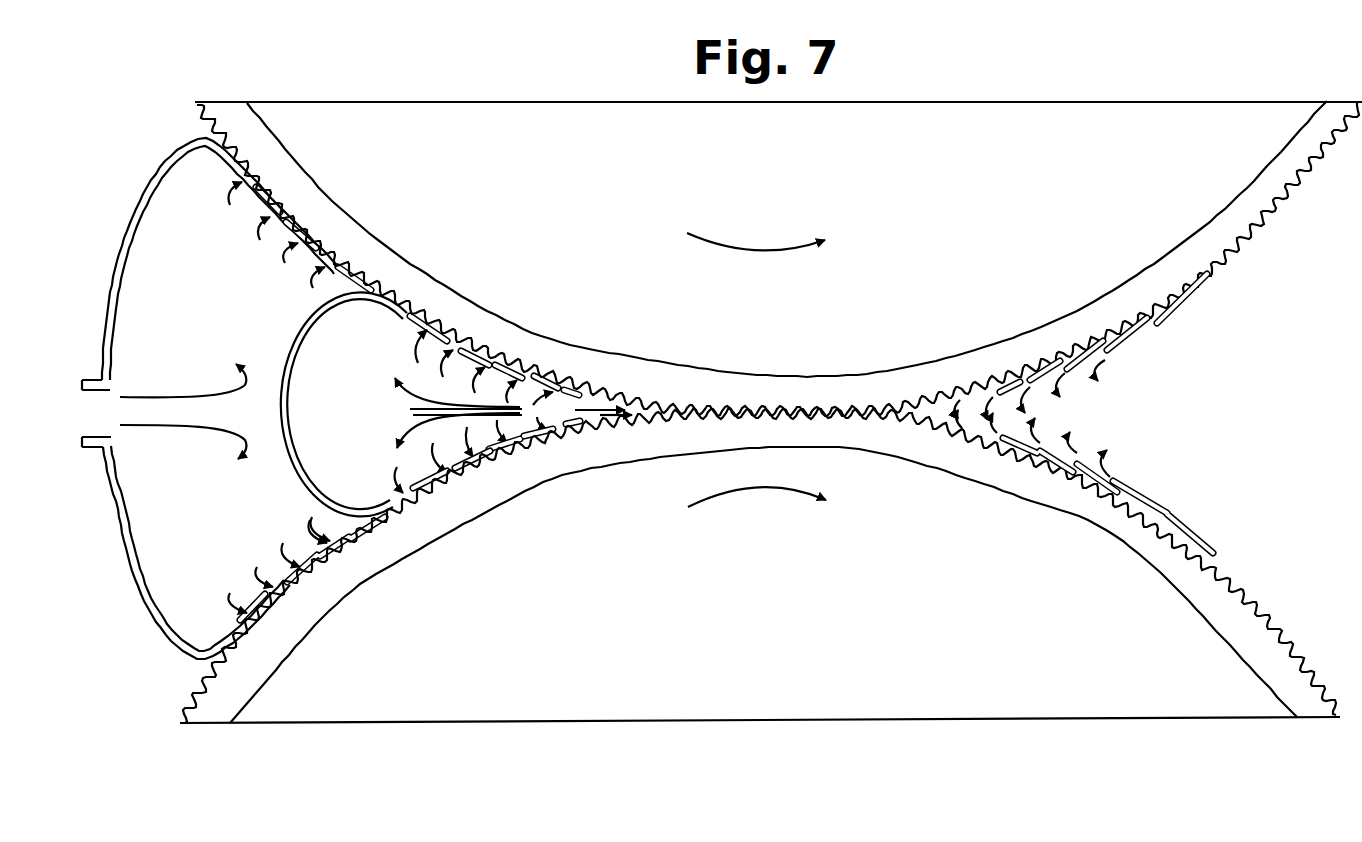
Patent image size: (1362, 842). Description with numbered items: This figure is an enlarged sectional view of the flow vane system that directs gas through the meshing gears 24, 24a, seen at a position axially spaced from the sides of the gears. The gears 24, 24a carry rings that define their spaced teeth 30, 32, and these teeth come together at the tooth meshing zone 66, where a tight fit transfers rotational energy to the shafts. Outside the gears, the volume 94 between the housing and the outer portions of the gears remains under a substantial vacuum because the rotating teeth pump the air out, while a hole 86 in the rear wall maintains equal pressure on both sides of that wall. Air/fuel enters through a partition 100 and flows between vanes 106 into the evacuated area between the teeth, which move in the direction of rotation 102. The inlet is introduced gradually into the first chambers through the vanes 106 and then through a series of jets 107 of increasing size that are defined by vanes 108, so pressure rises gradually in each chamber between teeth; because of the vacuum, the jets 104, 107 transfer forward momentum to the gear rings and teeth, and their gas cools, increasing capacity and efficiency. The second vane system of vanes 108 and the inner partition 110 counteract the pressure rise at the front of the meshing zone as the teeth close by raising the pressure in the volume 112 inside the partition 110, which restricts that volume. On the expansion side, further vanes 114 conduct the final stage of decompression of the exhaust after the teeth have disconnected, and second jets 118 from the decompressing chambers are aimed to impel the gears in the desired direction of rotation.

The volume 94 is at (137, 147).
The hole 86 is at (97, 380).
The partition 100 is at (132, 232).
The inner partition 110 is at (300, 355).
The volume 112 is at (355, 453).
The jets 104 is at (277, 220).
The vanes 106 is at (330, 267).
The vanes 108 is at (545, 373).
The jets 107 is at (448, 473).
The gears 24 is at (427, 278).
The gears 24a is at (507, 500).
The direction of rotation 102 is at (720, 247).
The tooth meshing zone 66 is at (777, 392).
The teeth 30 is at (1257, 230).
The teeth 32 is at (1260, 610).
The vanes 114 is at (1042, 447).
The second jets 118 is at (1107, 453).